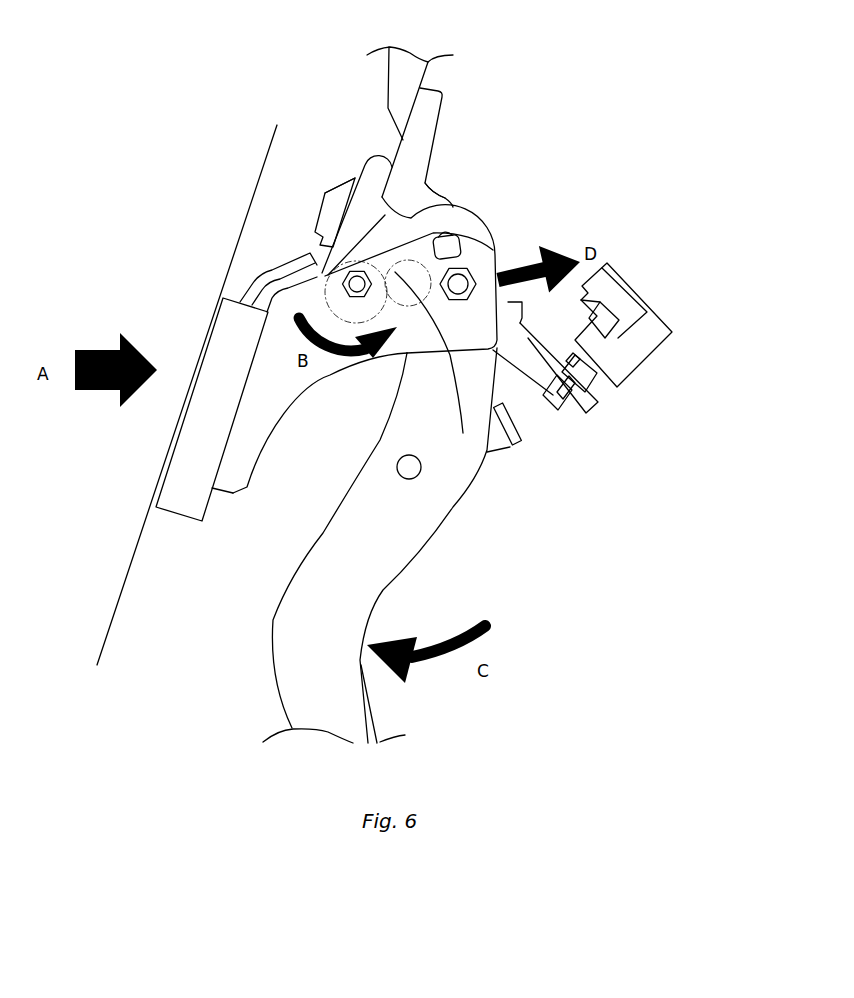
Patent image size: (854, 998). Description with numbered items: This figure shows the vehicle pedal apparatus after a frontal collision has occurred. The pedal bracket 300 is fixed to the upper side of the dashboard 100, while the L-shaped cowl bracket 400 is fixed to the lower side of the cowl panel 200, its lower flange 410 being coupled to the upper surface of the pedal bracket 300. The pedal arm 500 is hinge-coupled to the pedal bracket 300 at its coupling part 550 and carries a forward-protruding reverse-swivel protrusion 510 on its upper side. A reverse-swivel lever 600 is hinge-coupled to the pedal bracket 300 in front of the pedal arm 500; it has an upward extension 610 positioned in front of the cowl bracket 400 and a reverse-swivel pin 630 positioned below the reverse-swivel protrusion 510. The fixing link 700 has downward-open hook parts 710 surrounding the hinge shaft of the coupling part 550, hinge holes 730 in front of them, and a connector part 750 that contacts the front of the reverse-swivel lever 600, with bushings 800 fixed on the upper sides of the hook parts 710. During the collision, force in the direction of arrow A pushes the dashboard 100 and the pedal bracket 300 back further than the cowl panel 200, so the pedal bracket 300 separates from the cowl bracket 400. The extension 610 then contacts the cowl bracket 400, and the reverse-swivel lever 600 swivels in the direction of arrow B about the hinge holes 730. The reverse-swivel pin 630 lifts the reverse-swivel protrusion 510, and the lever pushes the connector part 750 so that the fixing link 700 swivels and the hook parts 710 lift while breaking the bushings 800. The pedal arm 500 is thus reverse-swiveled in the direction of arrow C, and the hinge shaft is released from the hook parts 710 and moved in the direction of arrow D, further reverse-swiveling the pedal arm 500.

The dashboard 100 is at (245, 225).
The cowl panel 200 is at (418, 72).
The pedal bracket 300 is at (233, 490).
The cowl bracket 400 is at (461, 112).
The flange 410 is at (436, 190).
The pedal arm 500 is at (433, 515).
The reverse-swivel protrusion 510 is at (463, 433).
The coupling part 550 is at (458, 285).
The reverse-swivel lever 600 is at (332, 178).
The extension 610 is at (378, 165).
The reverse-swivel pin 630 is at (400, 273).
The fixing link 700 is at (476, 199).
The hook parts 710 is at (475, 240).
The hinge holes 730 is at (345, 291).
The connector part 750 is at (327, 201).
The bushing 800 is at (490, 248).